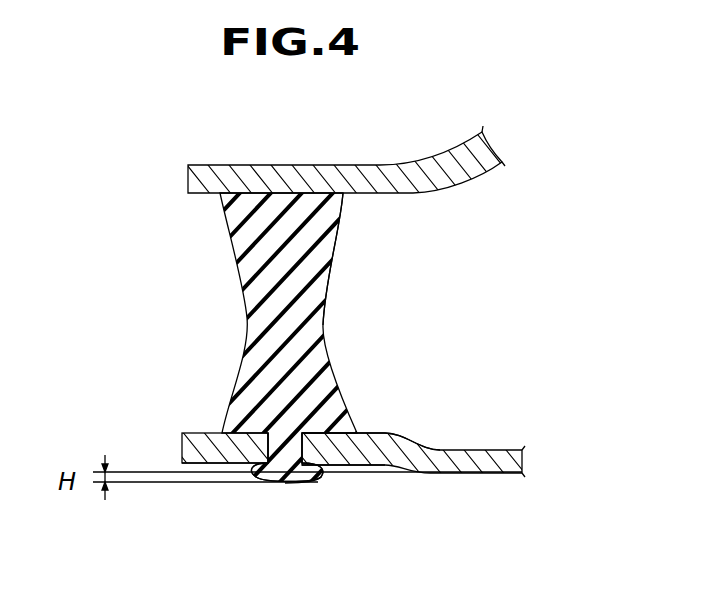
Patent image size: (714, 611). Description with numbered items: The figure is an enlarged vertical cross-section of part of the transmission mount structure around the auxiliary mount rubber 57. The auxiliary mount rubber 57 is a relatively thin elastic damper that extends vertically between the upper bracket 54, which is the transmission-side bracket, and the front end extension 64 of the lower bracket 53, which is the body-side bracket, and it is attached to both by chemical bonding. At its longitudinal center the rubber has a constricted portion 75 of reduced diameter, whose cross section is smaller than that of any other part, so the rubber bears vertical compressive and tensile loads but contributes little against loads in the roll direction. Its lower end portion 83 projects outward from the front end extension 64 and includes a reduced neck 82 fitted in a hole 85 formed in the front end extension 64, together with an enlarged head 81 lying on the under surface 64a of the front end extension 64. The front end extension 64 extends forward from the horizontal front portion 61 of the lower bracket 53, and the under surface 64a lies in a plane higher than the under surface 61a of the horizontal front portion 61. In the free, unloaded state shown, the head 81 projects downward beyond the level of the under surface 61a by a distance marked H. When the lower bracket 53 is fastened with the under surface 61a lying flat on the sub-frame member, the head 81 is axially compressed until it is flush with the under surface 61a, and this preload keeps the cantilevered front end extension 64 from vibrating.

The upper bracket 54 is at (378, 164).
The auxiliary mount rubber 57 is at (229, 252).
The constricted portion 75 is at (325, 310).
The hole 85 is at (288, 440).
The enlarged head 81 is at (287, 483).
The reduced neck 82 is at (277, 451).
The lower end portion 83 is at (318, 486).
The front end extension 64 is at (193, 433).
The under surface 64a is at (194, 467).
The lower bracket 53 is at (501, 478).
The horizontal front portion 61 is at (455, 472).
The under surface 61a is at (437, 474).